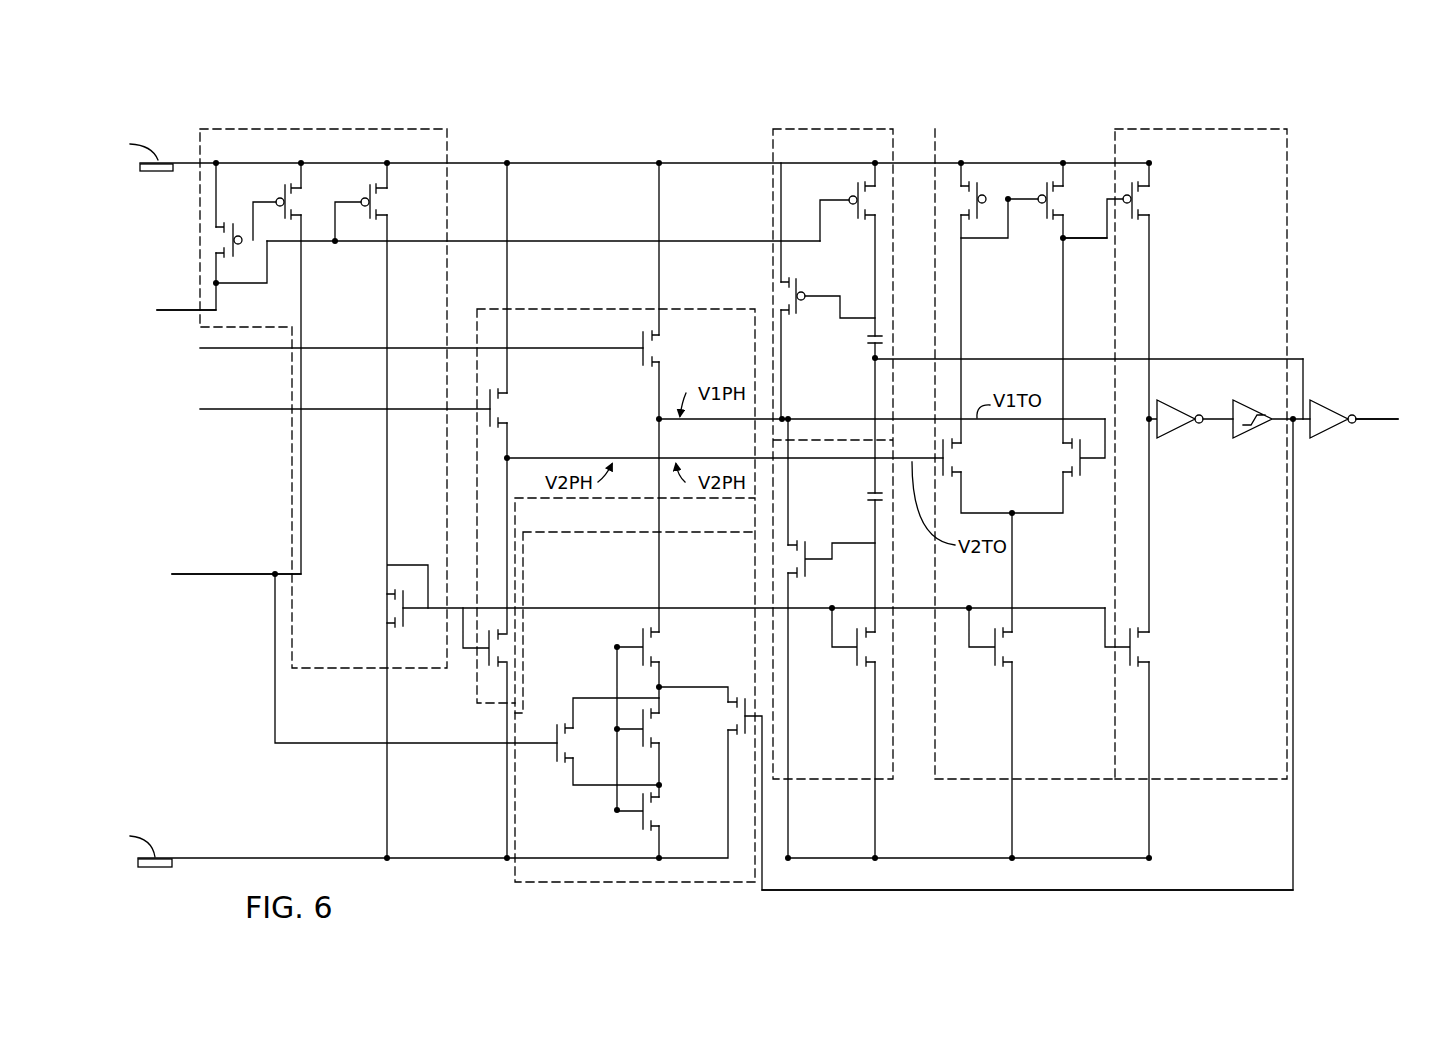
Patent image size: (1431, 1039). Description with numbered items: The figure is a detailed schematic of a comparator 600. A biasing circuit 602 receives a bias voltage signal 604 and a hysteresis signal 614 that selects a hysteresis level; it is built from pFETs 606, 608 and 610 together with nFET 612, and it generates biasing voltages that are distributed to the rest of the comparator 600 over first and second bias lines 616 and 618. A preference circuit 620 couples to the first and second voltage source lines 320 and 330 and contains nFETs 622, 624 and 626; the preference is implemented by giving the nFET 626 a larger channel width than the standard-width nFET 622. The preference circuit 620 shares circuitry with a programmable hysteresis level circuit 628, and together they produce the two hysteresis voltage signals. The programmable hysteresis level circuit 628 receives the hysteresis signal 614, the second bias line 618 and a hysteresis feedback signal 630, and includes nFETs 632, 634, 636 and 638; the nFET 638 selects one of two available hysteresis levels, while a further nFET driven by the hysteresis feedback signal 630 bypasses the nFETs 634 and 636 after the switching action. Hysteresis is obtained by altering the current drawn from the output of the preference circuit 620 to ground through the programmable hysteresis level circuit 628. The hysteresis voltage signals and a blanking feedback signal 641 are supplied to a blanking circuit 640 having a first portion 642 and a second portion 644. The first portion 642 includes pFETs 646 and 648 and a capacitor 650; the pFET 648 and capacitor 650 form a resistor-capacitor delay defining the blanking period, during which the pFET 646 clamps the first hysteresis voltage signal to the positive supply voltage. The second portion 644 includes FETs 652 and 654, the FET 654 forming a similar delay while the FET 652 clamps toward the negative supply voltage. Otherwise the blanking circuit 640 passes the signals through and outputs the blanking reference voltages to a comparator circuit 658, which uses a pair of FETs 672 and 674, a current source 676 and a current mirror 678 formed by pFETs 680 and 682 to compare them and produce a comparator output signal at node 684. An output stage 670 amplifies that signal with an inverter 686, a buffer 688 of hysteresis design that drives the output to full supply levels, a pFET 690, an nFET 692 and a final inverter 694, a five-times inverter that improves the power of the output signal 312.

The comparator 600 is at (583, 110).
The biasing circuit 602 is at (345, 120).
The bias voltage signal 604 is at (175, 302).
The pFET 606 is at (214, 241).
The pFET 608 is at (303, 206).
The pFET 610 is at (388, 204).
The nFET 612 is at (385, 610).
The hysteresis signal 614 is at (205, 576).
The first bias line 616 is at (395, 244).
The second bias line 618 is at (440, 603).
The preference circuit 620 is at (560, 304).
The nFET 622 is at (508, 413).
The nFET 624 is at (512, 650).
The nFET 626 is at (661, 347).
The programmable hysteresis level circuit 628 is at (540, 886).
The hysteresis feedback signal 630 is at (805, 891).
The nFET 632 is at (661, 648).
The nFET 634 is at (661, 730).
The nFET 636 is at (686, 805).
The nFET 638 is at (574, 743).
The blanking circuit 640 is at (835, 122).
The blanking feedback signal 641 is at (1210, 358).
The first portion 642 is at (796, 382).
The second portion 644 is at (838, 494).
The pFET 646 is at (798, 276).
The pFET 648 is at (880, 202).
The capacitor 650 is at (867, 340).
The FET 652 is at (799, 571).
The FET 654 is at (877, 650).
The comparator circuit 658 is at (975, 781).
The output stage 670 is at (1235, 163).
The FET 672 is at (961, 451).
The FET 674 is at (1063, 451).
The current source 676 is at (1014, 650).
The current mirror 678 is at (995, 294).
The pFET 680 is at (960, 204).
The pFET 682 is at (1060, 201).
The node 684 is at (1063, 241).
The inverter 686 is at (1178, 430).
The buffer 688 is at (1258, 430).
The pFET 690 is at (1145, 201).
The nFET 692 is at (1151, 650).
The final inverter 694 is at (1332, 430).
The output signal 312 is at (1372, 421).
The first voltage source line 320 is at (228, 350).
The second voltage source line 330 is at (228, 411).